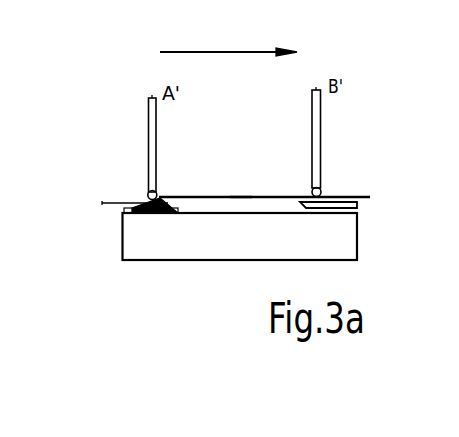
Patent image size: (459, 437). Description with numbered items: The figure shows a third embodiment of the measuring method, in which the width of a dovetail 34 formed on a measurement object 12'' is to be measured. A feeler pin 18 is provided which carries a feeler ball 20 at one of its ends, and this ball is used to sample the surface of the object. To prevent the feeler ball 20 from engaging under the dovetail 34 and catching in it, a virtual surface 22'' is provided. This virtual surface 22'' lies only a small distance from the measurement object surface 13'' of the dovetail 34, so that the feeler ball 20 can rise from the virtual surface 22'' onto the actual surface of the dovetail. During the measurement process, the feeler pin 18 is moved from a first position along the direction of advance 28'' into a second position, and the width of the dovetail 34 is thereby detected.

The measurement object 12'' is at (240, 312).
The measurement object surface 13'' is at (264, 152).
The dovetail 34 is at (240, 202).
The feeler pin 18 is at (155, 125).
The feeler ball 20 is at (150, 196).
The virtual surface 22'' is at (375, 147).
The direction of advance 28'' is at (228, 39).